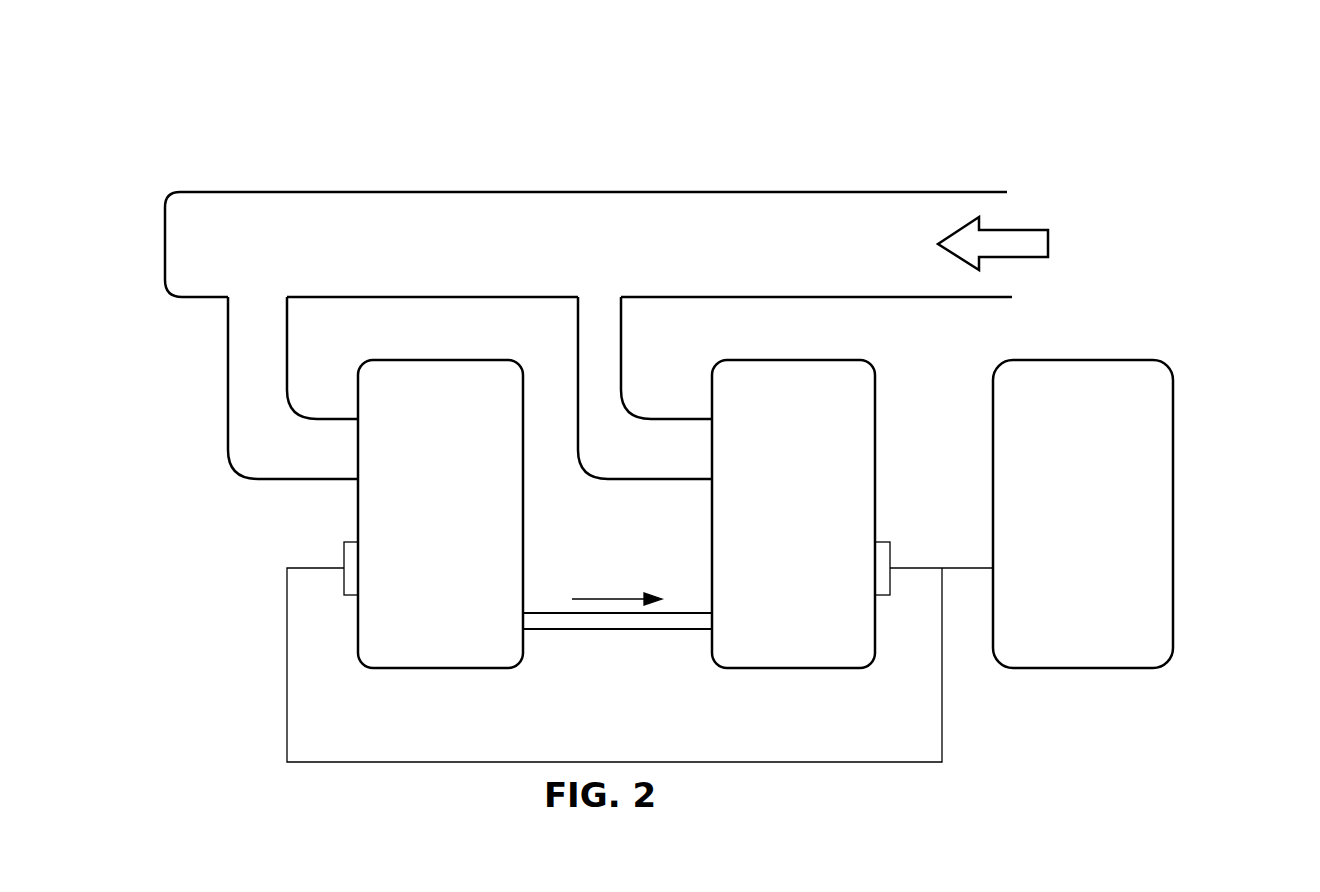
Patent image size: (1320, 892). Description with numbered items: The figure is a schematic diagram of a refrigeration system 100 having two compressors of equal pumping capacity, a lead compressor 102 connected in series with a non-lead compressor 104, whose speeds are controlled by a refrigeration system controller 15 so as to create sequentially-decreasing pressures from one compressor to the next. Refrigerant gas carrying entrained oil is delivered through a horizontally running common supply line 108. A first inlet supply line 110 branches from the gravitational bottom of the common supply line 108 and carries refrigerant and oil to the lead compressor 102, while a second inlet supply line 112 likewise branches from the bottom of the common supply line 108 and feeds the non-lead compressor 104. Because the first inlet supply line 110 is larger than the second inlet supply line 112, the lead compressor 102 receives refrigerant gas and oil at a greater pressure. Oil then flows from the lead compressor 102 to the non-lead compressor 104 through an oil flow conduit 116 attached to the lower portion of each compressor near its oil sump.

The refrigeration system 100 is at (975, 103).
The lead compressor 102 is at (400, 668).
The non-lead compressor 104 is at (750, 668).
The common supply line 108 is at (345, 191).
The first inlet supply line 110 is at (228, 313).
The second inlet supply line 112 is at (578, 310).
The oil flow conduit 116 is at (560, 630).
The refrigeration system controller 15 is at (1030, 668).